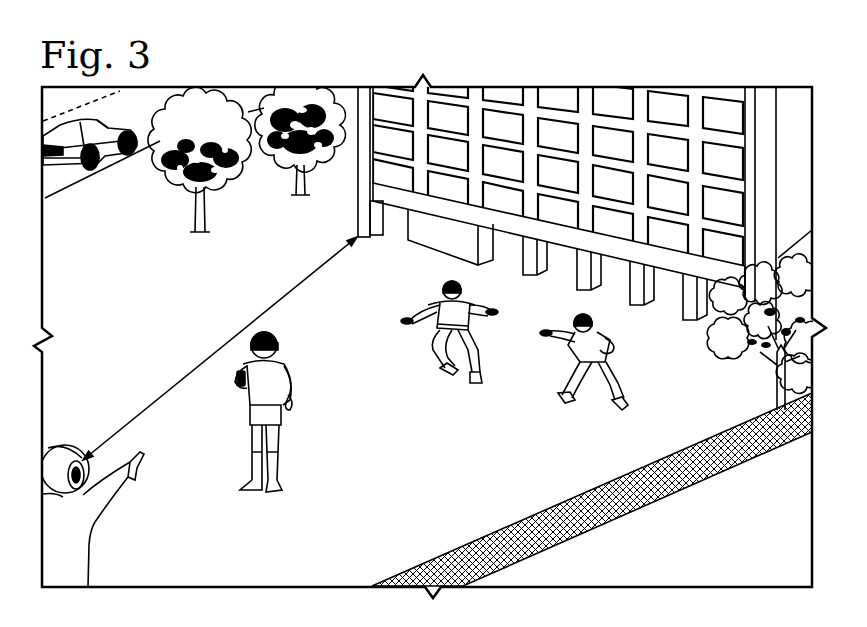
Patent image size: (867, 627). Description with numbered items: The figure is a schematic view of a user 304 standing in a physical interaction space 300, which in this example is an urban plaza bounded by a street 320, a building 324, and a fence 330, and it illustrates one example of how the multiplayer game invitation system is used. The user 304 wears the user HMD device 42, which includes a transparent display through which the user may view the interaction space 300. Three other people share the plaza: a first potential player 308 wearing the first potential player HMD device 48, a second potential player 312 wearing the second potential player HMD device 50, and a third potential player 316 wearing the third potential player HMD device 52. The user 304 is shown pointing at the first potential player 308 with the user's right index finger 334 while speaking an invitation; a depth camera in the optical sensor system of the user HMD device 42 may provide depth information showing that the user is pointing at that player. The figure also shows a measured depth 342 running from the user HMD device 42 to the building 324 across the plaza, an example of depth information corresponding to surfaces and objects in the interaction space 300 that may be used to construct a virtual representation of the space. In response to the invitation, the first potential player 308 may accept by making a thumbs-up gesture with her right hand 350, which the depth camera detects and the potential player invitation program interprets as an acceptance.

The physical interaction space 300 is at (133, 276).
The user 304 is at (88, 560).
The user HMD device 42 is at (75, 492).
The right index finger 334 is at (145, 453).
The measured depth 342 is at (293, 288).
The first potential player 308 is at (288, 365).
The first potential player HMD device 48 is at (257, 348).
The right hand 350 is at (242, 386).
The second potential player 312 is at (440, 335).
The second potential player HMD device 50 is at (461, 290).
The third potential player 316 is at (612, 375).
The third potential player HMD device 52 is at (577, 320).
The building 324 is at (362, 153).
The fence 330 is at (636, 511).
The street 320 is at (156, 112).